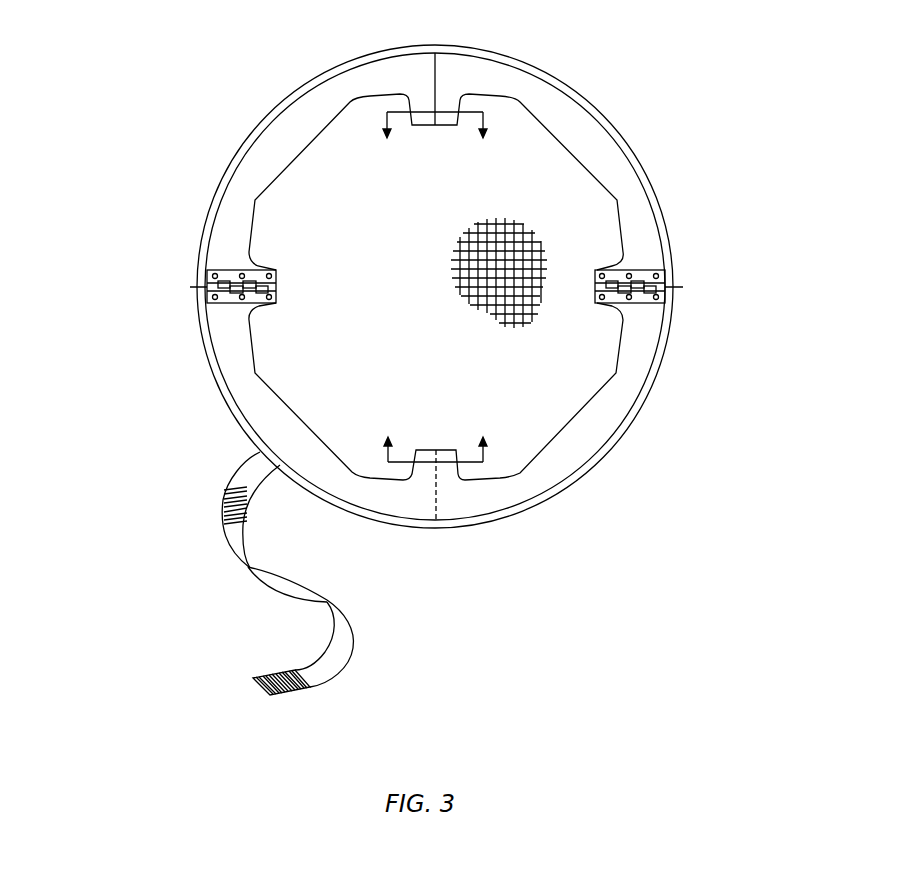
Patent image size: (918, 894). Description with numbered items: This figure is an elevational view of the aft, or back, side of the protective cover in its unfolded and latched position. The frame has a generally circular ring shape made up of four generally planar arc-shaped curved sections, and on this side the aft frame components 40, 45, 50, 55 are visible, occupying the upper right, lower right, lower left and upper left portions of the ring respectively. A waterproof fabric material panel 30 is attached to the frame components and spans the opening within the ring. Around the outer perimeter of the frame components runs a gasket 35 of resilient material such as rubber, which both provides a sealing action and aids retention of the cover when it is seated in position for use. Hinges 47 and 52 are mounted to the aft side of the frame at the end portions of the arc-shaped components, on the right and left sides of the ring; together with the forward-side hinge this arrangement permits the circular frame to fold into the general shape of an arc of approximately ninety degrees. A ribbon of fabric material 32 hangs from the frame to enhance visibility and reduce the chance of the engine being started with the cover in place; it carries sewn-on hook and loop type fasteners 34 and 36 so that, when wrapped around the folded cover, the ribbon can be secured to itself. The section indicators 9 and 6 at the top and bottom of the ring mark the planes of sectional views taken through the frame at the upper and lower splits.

The waterproof fabric material panel 30 is at (540, 340).
The ribbon of fabric material 32 is at (343, 630).
The hook and loop type fastener 34 is at (225, 505).
The gasket 35 is at (225, 185).
The hook and loop type fastener 36 is at (293, 692).
The aft frame component 40 is at (582, 130).
The aft frame component 45 is at (593, 428).
The hinge 47 is at (645, 273).
The aft frame component 50 is at (260, 405).
The hinge 52 is at (227, 273).
The aft frame component 55 is at (297, 132).
The section line 9- 9 is at (435, 139).
The section line 6- 6 is at (436, 437).